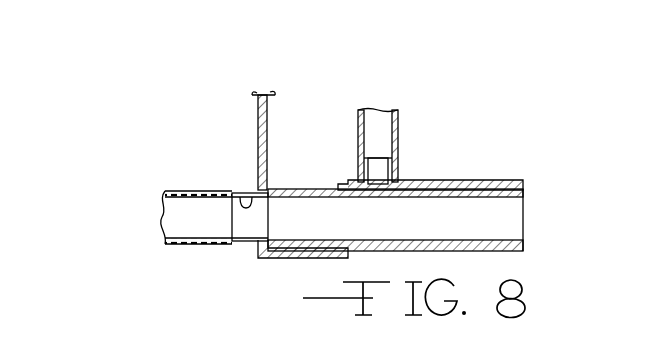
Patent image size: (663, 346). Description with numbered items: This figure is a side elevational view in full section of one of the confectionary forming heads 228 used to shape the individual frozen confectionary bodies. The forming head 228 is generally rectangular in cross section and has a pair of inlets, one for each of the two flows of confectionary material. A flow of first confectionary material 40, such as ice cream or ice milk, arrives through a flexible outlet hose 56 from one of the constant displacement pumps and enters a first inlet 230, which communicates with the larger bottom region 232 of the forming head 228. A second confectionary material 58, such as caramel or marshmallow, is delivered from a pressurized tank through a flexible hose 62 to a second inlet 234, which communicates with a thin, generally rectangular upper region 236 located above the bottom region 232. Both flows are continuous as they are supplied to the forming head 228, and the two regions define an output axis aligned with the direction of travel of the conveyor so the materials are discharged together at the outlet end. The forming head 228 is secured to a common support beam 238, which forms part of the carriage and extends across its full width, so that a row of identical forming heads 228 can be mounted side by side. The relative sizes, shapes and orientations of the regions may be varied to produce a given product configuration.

The first confectionary material 40 is at (130, 218).
The flexible outlet hose 56 is at (190, 190).
The second confectionary material 58 is at (380, 88).
The flexible hose 62 is at (397, 112).
The forming head 228 is at (301, 258).
The first inlet 230 is at (242, 195).
The bottom region 232 is at (417, 230).
The second inlet 234 is at (393, 166).
The upper region 236 is at (492, 186).
The support beam 238 is at (268, 120).